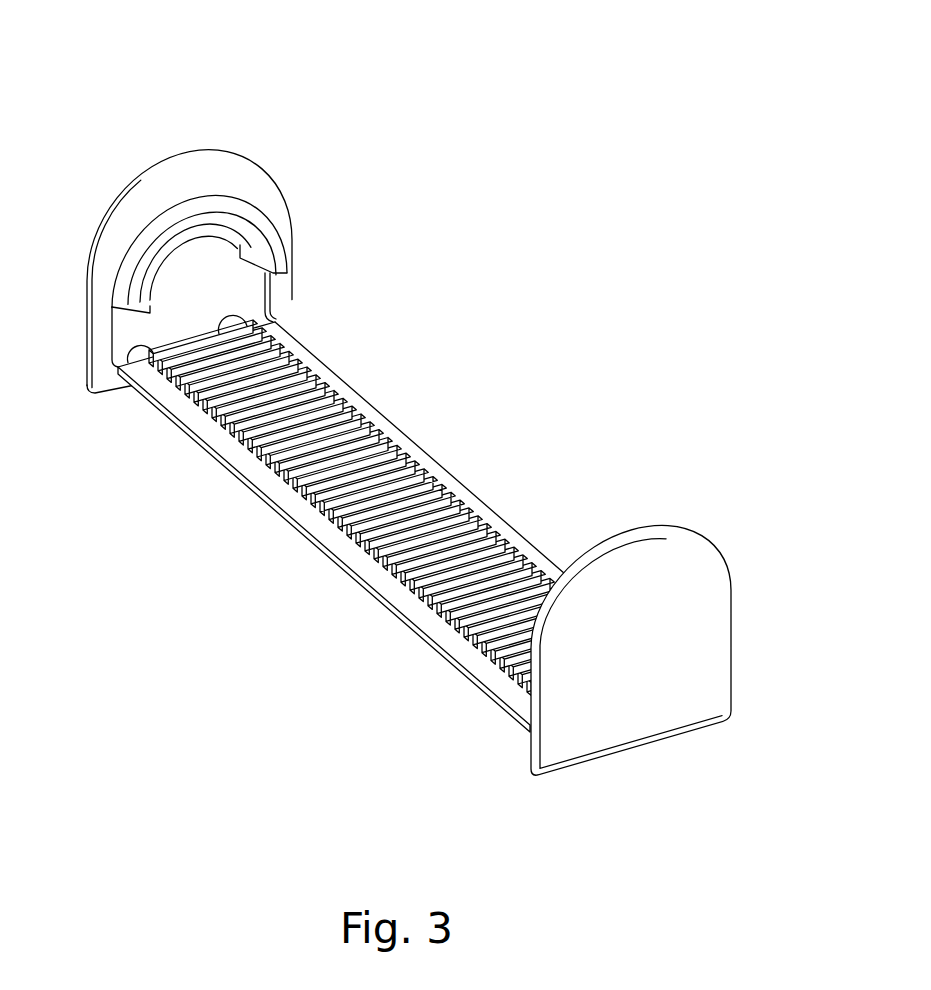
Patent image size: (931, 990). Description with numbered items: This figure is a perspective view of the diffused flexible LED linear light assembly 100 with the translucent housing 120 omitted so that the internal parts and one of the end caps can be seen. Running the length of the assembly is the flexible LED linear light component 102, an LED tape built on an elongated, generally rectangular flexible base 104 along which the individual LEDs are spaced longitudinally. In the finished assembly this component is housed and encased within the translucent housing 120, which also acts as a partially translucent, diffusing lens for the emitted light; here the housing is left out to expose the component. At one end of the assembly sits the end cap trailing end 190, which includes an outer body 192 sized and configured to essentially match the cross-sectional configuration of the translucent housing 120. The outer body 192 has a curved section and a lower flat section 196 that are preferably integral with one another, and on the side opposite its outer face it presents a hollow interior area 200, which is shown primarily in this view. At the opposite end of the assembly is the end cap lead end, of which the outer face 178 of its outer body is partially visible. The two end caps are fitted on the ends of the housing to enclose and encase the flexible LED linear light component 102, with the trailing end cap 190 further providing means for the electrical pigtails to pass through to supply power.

The diffused flexible LED linear light assembly 100 is at (390, 440).
The flexible LED linear light component 102 is at (477, 409).
The flexible base 104 is at (308, 554).
The partially translucent housing 120 is at (558, 674).
The outer face 178 is at (571, 682).
The end cap trailing end 190 is at (211, 257).
The outer body 192 is at (238, 178).
The lower flat section 196 is at (113, 383).
The hollow interior area 200 is at (231, 283).